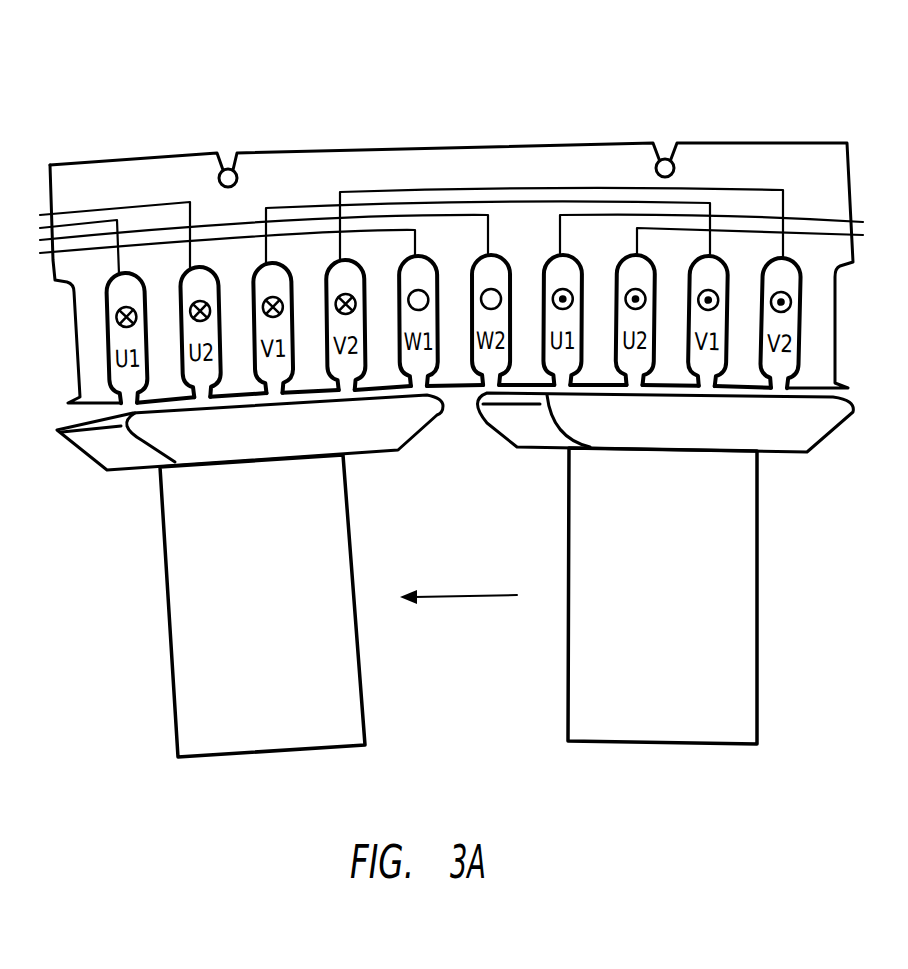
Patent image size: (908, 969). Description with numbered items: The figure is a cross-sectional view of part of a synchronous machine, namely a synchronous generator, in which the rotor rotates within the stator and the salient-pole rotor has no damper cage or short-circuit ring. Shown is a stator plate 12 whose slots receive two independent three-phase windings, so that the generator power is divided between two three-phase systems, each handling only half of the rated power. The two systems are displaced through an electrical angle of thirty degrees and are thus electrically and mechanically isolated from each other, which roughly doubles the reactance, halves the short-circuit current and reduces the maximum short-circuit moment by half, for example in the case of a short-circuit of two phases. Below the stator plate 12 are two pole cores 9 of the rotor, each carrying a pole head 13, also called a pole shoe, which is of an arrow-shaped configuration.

The stator plate 12 is at (438, 163).
The pole head 13 is at (407, 440).
The pole core 9 is at (347, 662).